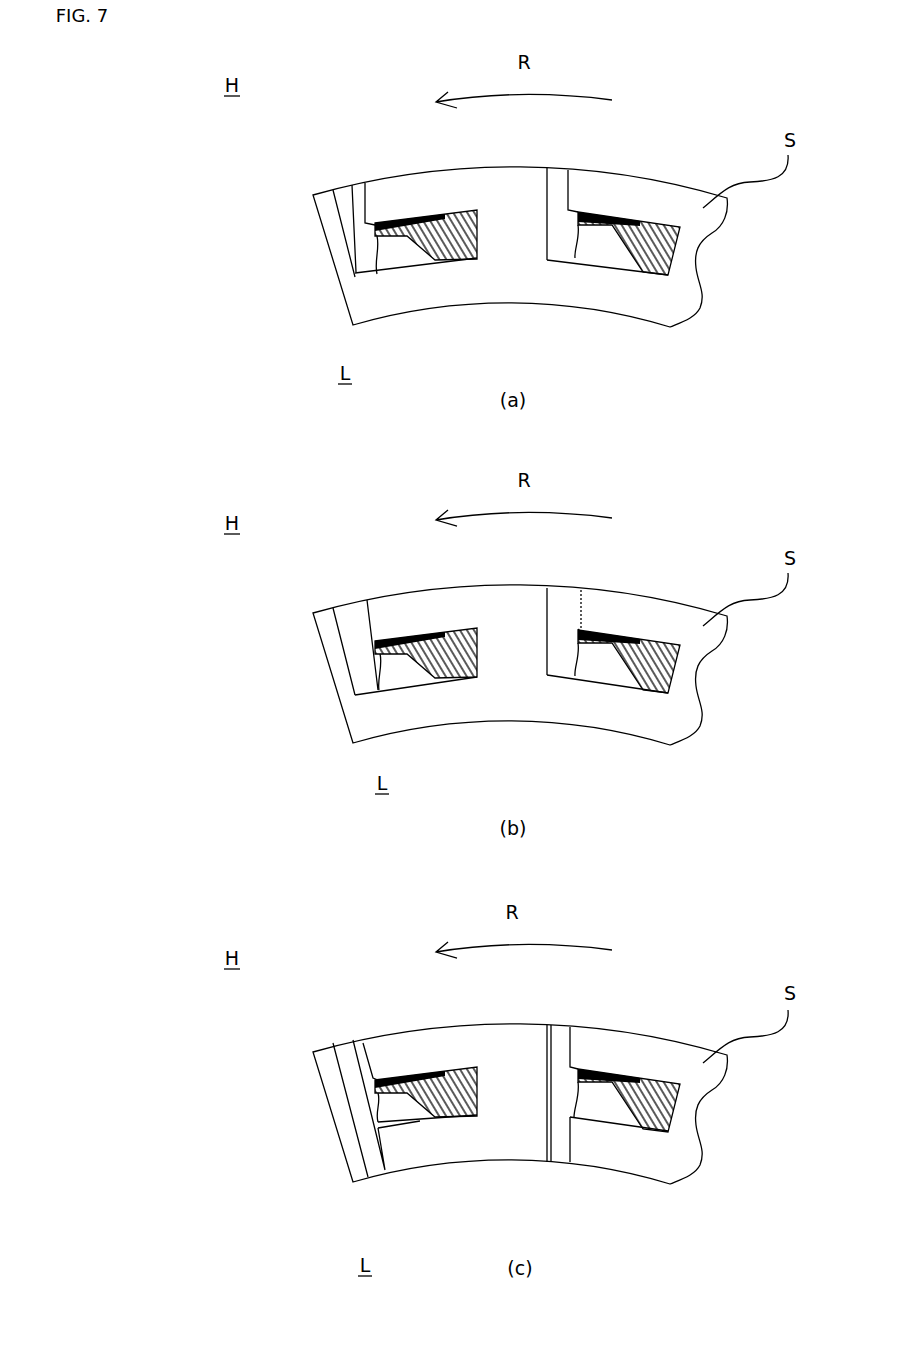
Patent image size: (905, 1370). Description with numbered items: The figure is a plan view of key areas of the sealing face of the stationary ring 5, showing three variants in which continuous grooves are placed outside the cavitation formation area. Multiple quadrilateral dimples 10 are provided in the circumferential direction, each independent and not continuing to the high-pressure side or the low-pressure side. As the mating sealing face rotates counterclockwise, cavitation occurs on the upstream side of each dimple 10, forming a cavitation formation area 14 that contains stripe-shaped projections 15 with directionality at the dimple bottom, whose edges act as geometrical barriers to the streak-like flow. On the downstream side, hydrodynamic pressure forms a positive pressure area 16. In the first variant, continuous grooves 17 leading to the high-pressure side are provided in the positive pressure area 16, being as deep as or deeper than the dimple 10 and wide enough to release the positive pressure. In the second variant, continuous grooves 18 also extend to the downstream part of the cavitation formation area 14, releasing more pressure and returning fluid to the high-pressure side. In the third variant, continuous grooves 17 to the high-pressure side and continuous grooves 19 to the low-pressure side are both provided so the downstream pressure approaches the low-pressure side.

The stationary ring 5 is at (699, 181).
The dimple 10 is at (441, 198).
The cavitation formation area 14 is at (397, 247).
The stripe-shaped projections with directionality 15 is at (437, 262).
The positive pressure area 16 is at (363, 252).
The continuous grooves 17 is at (345, 203).
The continuous grooves 18 is at (353, 615).
The continuous grooves 19 is at (373, 1157).